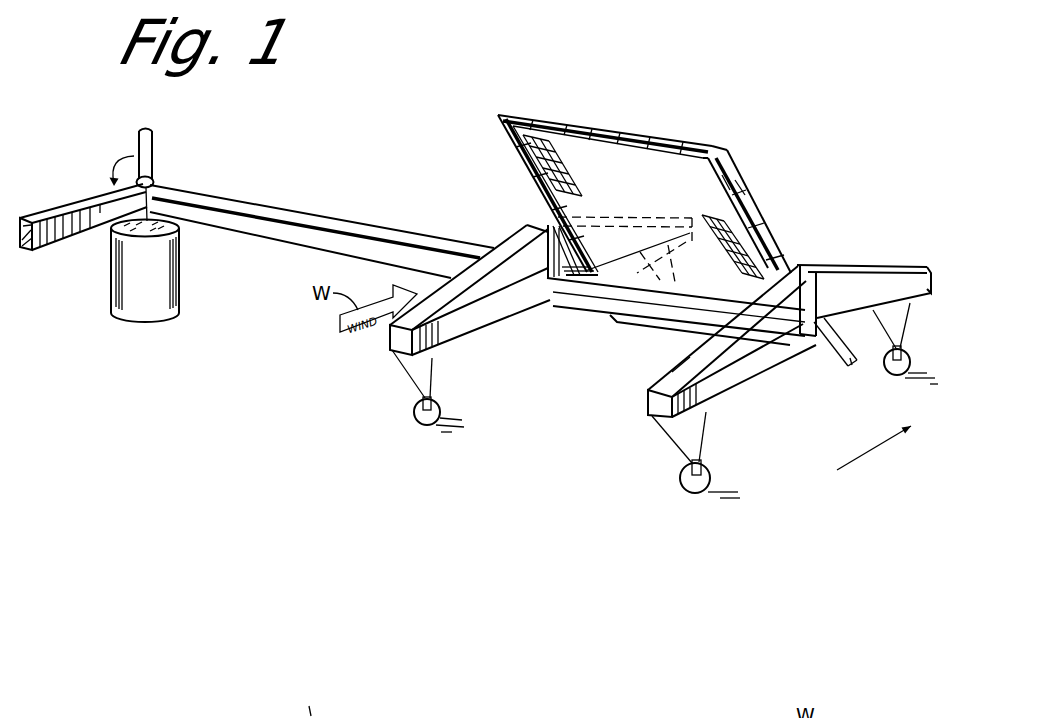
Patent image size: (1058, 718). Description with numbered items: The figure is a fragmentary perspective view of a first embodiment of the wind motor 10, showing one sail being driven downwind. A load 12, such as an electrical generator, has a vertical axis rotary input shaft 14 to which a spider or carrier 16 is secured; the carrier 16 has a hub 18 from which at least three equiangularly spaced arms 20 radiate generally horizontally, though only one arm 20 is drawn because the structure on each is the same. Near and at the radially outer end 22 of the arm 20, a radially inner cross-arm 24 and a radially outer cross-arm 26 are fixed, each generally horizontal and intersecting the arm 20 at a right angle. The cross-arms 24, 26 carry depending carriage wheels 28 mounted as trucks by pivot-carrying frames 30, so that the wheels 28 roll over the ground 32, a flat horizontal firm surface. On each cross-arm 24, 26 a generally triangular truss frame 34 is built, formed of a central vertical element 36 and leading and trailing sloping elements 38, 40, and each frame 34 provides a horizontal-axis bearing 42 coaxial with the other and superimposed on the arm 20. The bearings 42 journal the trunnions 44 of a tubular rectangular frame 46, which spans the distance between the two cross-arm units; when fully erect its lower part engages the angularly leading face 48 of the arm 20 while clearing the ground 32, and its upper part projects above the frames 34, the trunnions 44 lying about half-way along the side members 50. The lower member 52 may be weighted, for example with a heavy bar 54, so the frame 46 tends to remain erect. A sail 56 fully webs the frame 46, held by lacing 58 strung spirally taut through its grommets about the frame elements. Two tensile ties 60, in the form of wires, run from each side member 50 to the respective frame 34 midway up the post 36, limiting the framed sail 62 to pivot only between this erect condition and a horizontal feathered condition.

The wind motor 10 is at (290, 148).
The load 12 is at (112, 282).
The vertical axis rotary input shaft 14 is at (147, 223).
The carrier 16 is at (190, 183).
The hub 18 is at (152, 179).
The arm 20 is at (153, 137).
The radially outer end 22 is at (767, 330).
The radially inner cross-arm 24 is at (486, 320).
The radially outer cross-arm 26 is at (743, 377).
The carriage wheels 28 is at (432, 427).
The pivot-carrying frames 30 is at (417, 367).
The ground 32 is at (715, 512).
The frame 34 is at (488, 247).
The central vertical element 36 is at (563, 282).
The leading sloping element 38 is at (855, 263).
The trailing sloping element 40 is at (672, 366).
The horizontal-axis bearings 42 is at (810, 282).
The trunnions 44 is at (567, 263).
The frame 46 is at (637, 187).
The angularly leading face 48 is at (700, 293).
The side members 50 is at (517, 152).
The lower member 52 is at (827, 330).
The heavy bar 54 is at (841, 363).
The sail 56 is at (690, 182).
The lacing 58 is at (558, 122).
The tensile ties 60 is at (584, 247).
The framed sail 62 is at (743, 178).